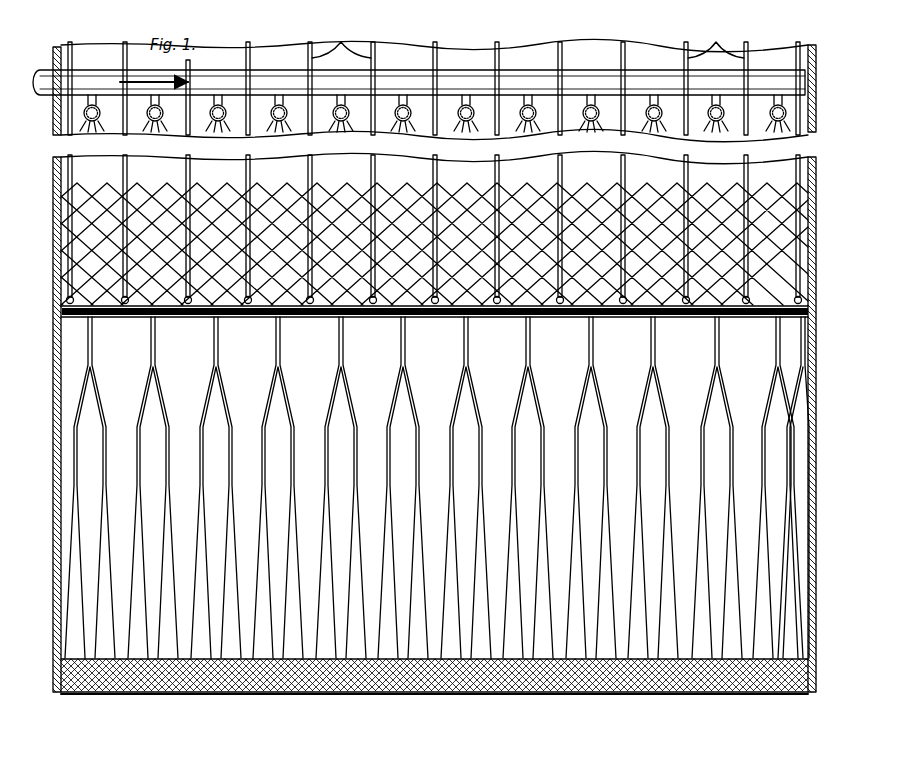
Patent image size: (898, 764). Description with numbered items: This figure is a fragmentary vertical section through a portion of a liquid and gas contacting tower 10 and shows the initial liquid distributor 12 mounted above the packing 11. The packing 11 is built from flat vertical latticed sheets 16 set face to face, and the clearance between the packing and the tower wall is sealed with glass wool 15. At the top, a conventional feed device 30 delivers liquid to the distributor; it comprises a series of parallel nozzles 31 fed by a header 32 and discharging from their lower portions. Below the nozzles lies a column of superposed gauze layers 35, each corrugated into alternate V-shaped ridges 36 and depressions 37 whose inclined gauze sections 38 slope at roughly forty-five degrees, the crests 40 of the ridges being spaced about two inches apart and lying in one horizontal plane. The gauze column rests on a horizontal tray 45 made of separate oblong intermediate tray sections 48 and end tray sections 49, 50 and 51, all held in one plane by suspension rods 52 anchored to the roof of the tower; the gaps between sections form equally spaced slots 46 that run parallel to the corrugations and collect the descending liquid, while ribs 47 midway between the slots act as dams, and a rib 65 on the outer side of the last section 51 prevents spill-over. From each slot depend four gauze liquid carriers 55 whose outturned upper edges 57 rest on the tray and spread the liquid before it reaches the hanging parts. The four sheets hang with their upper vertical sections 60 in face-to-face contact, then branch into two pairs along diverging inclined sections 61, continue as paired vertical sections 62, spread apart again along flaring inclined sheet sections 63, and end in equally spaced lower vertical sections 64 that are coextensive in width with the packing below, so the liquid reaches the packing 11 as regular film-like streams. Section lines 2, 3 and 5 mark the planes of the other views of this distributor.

The tower 10 is at (56, 50).
The packing 11 is at (118, 688).
The distributor 12 is at (452, 181).
The glass wool 15 is at (58, 692).
The sheets 16 is at (340, 696).
The section line 2 is at (40, 168).
The section line 3 is at (432, 720).
The section line 5 is at (800, 346).
The feed device 30 is at (468, 68).
The nozzles 31 is at (654, 104).
The header 32 is at (520, 82).
The gauze layers 35 is at (60, 236).
The ridges 36 is at (222, 186).
The depressions 37 is at (405, 186).
The inclined gauze sections 38 is at (660, 192).
The crests 40 is at (715, 186).
The tray 45 is at (132, 322).
The slots 46 is at (315, 318).
The ribs 47 is at (178, 318).
The intermediate tray sections 48 is at (430, 318).
The end tray section 49 is at (213, 338).
The stepped tray section 50 is at (146, 332).
The last tray section 51 is at (74, 326).
The suspension rods 52 is at (434, 74).
The liquid carriers 55 is at (270, 572).
The upper edges 57 is at (380, 320).
The upper vertical sections 60 is at (338, 364).
The inclined sections 61 is at (548, 402).
The vertical sections 62 is at (548, 454).
The inclined sheet sections 63 is at (548, 529).
The lower vertical sections 64 is at (299, 652).
The rib 65 is at (66, 308).